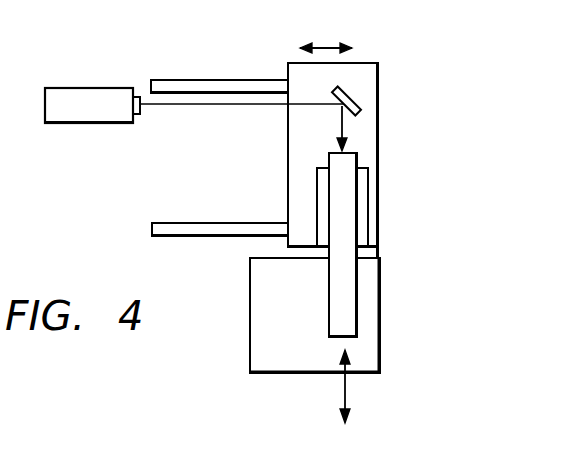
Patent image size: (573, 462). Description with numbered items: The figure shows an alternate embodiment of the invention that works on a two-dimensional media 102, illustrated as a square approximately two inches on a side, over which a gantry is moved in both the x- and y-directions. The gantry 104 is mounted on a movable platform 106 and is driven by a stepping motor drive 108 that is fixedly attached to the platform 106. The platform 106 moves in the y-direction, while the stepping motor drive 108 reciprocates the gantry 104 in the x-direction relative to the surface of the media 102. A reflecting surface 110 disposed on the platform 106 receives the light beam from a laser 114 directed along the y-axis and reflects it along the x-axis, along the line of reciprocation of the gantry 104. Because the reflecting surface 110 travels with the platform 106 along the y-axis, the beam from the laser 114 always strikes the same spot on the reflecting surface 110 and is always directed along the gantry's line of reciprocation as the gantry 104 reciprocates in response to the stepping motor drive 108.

The two-dimensional media 102 is at (263, 328).
The gantry 104 is at (350, 278).
The movable platform 106 is at (288, 165).
The stepping motor drive 108 is at (362, 188).
The reflecting surface 110 is at (355, 103).
The laser 114 is at (90, 96).